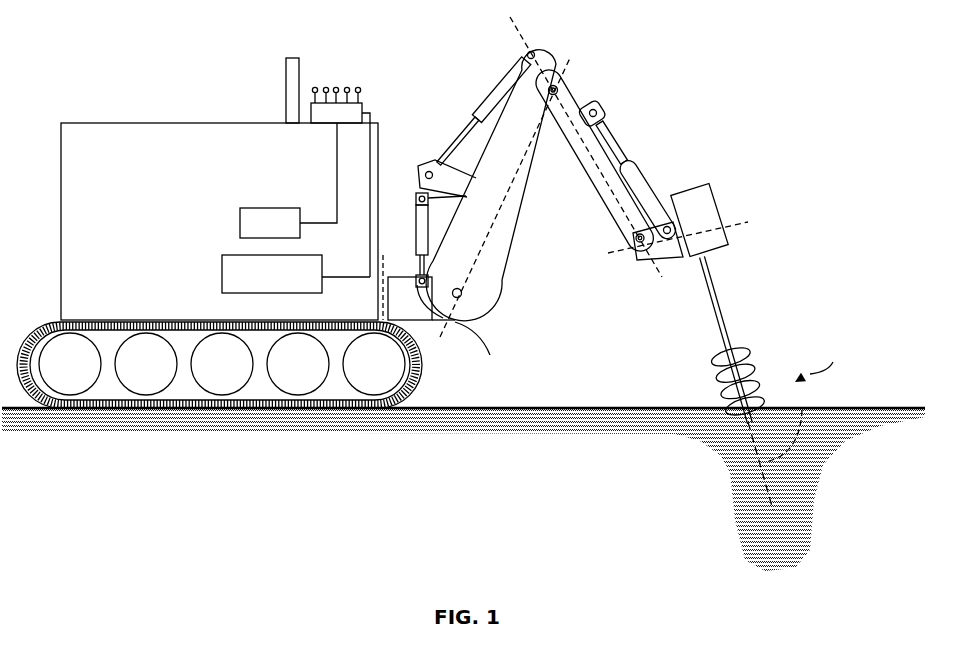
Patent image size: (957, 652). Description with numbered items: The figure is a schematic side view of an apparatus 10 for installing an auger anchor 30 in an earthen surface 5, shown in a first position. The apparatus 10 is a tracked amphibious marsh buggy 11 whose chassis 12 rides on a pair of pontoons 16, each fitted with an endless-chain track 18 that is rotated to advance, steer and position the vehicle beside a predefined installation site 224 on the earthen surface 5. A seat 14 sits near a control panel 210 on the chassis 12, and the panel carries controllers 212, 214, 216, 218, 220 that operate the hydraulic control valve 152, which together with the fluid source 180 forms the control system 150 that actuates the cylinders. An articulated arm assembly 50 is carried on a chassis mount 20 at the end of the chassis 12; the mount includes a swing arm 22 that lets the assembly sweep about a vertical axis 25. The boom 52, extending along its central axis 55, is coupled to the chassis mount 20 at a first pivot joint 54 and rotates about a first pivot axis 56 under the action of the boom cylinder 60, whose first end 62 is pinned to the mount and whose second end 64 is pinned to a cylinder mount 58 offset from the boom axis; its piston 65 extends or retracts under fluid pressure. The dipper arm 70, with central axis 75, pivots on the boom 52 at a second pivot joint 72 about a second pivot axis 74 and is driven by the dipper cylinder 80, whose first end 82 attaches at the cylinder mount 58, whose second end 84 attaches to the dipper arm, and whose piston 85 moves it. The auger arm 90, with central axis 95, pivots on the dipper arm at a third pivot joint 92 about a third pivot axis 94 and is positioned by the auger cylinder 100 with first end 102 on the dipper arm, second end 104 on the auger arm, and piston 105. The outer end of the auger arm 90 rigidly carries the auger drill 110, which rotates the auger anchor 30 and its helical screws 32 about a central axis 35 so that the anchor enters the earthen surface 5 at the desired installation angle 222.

The earthen surface 5 is at (870, 408).
The apparatus 10 is at (97, 52).
The marsh buggy 11 is at (463, 287).
The chassis 12 is at (93, 142).
The seat 14 is at (292, 80).
The pontoons 16 is at (333, 406).
The endless-chain track 18 is at (422, 365).
The chassis mount 20 is at (417, 318).
The swing arm 22 is at (405, 288).
The vertical axis 25 is at (383, 268).
The auger anchor 30 is at (733, 320).
The helical screws 32 is at (722, 372).
The central axis 35 is at (767, 485).
The articulated arm assembly 50 is at (625, 260).
The boom 52 is at (520, 207).
The first pivot joint 54 is at (460, 298).
The central axis of boom 55 is at (487, 232).
The first pivot axis 56 is at (457, 293).
The cylinder mount 58 is at (416, 182).
The boom cylinder 60 is at (418, 225).
The first end of boom cylinder 62 is at (455, 322).
The second end of boom cylinder 64 is at (418, 197).
The piston of boom cylinder 65 is at (490, 296).
The dipper arm 70 is at (603, 192).
The second pivot joint 72 is at (555, 86).
The second pivot axis 74 is at (553, 90).
The central axis of dipper arm 75 is at (588, 150).
The dipper cylinder 80 is at (490, 100).
The first end of dipper cylinder 82 is at (429, 170).
The second end of dipper cylinder 84 is at (525, 52).
The piston of dipper cylinder 85 is at (455, 142).
The auger arm 90 is at (665, 245).
The third pivot joint 92 is at (636, 246).
The third pivot axis 94 is at (640, 238).
The central axis of auger arm 95 is at (742, 222).
The auger cylinder 100 is at (641, 190).
The first end of auger cylinder 102 is at (597, 108).
The second end of auger cylinder 104 is at (668, 222).
The piston of auger cylinder 105 is at (616, 137).
The auger drill 110 is at (722, 237).
The control system 150 is at (277, 208).
The hydraulic control valve 152 is at (288, 180).
The fluid source 180 is at (296, 274).
The control panel 210 is at (320, 116).
The boom controller 212 is at (358, 88).
The dipper controller 214 is at (347, 87).
The auger controller 216 is at (336, 87).
The controller 218 is at (326, 87).
The controller 220 is at (315, 87).
The installation angle 222 is at (797, 455).
The installation site 224 is at (814, 359).